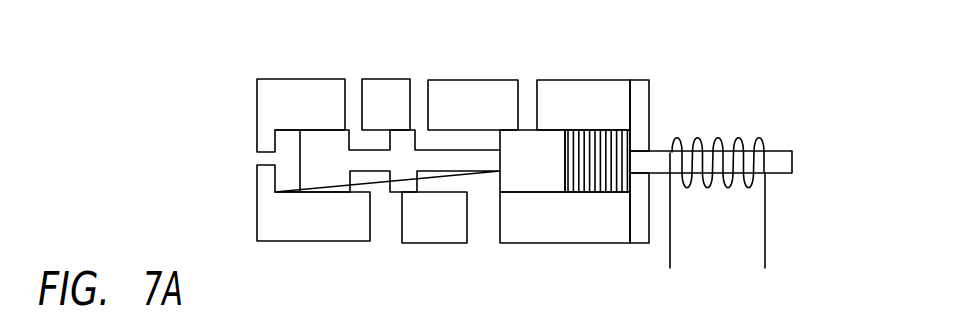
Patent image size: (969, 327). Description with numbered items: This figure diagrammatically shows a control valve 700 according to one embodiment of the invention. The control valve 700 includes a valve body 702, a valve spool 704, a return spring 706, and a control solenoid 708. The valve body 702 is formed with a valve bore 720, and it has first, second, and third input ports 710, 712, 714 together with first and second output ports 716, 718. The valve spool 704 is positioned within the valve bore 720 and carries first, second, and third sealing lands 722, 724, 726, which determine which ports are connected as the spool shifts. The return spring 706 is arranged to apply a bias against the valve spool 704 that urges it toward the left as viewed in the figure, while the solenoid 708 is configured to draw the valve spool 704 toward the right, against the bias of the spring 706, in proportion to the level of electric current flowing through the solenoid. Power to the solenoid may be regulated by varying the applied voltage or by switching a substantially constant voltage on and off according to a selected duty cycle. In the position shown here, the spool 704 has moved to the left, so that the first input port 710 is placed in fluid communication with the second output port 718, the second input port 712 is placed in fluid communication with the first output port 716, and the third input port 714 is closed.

The control valve 700 is at (151, 62).
The valve body 702 is at (287, 98).
The valve spool 704 is at (478, 172).
The return spring 706 is at (598, 192).
The control solenoid 708 is at (760, 138).
The first input port 710 is at (412, 93).
The second input port 712 is at (357, 95).
The third input port 714 is at (535, 95).
The first output port 716 is at (369, 222).
The second output port 718 is at (468, 217).
The valve bore 720 is at (290, 130).
The first sealing land 722 is at (322, 183).
The second sealing land 724 is at (405, 175).
The third sealing land 726 is at (527, 148).